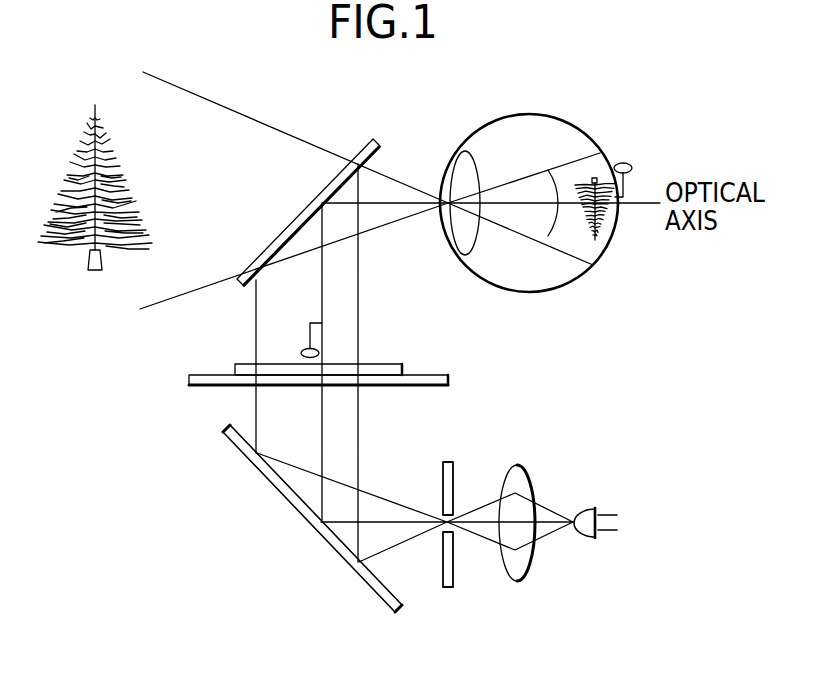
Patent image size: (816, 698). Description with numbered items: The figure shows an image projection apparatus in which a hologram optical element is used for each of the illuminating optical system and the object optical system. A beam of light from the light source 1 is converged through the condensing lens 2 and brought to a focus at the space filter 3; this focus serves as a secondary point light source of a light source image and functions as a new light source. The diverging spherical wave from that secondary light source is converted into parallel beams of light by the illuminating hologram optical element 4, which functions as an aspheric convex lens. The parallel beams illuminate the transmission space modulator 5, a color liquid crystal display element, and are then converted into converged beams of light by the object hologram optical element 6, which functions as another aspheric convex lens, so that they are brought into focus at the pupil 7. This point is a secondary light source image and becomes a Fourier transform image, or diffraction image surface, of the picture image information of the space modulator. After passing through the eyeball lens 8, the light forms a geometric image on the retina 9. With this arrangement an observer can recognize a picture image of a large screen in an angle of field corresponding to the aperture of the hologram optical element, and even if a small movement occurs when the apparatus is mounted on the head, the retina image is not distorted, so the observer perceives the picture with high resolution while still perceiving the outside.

The light source 1 is at (590, 541).
The condensing lens 2 is at (511, 580).
The space filter 3 is at (441, 588).
The illuminating hologram optical element 4 is at (325, 546).
The transmission space modulator 5 is at (208, 375).
The object hologram optical element 6 is at (333, 178).
The pupil 7 is at (440, 196).
The eyeball lens 8 is at (472, 256).
The retina 9 is at (608, 242).